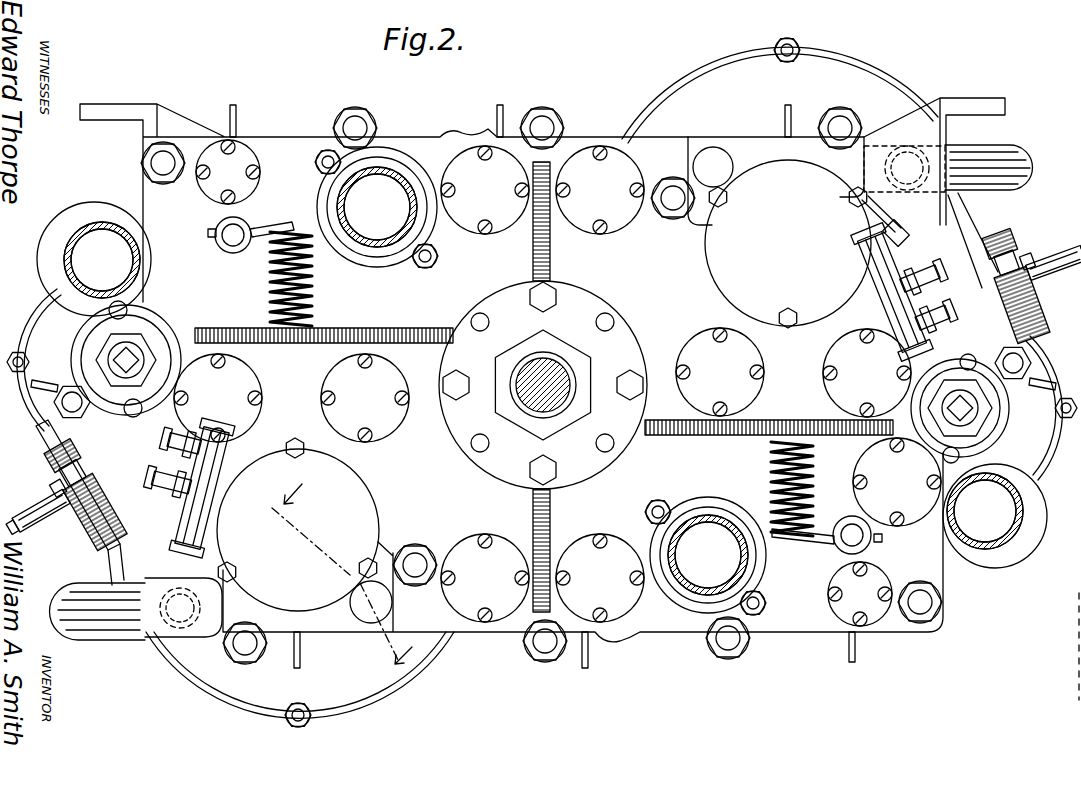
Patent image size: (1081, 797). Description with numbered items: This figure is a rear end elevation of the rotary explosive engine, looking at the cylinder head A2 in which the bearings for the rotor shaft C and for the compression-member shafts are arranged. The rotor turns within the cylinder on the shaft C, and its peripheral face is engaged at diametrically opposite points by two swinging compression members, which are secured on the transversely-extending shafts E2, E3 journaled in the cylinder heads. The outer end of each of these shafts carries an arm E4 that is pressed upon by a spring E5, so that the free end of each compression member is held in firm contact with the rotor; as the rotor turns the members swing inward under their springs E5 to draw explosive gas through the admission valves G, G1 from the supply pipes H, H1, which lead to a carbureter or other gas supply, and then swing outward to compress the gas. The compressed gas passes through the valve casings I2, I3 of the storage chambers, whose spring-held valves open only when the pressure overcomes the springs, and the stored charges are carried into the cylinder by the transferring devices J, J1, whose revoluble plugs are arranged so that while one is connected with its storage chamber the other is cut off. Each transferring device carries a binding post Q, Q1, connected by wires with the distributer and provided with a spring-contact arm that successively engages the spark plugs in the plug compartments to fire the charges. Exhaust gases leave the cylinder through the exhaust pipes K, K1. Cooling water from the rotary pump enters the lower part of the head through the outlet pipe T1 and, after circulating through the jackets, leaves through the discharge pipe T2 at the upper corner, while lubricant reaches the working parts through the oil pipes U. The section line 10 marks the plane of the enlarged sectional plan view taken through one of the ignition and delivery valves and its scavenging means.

The cylinder head A2 is at (608, 136).
The supply pipe H is at (94, 259).
The supply pipe H1 is at (1010, 515).
The admission valve G is at (99, 354).
The admission valve G1 is at (970, 384).
The exhaust pipe K1 is at (377, 207).
The exhaust pipe K is at (708, 555).
The shaft C is at (530, 366).
The transferring device J is at (304, 530).
The transferring device J1 is at (788, 244).
The shaft E2 is at (232, 240).
The shaft E3 is at (852, 532).
The arm E4 is at (281, 229).
The spring E5 is at (313, 292).
The binding post Q is at (185, 460).
The binding post Q1 is at (918, 300).
The valve casing I2 is at (58, 480).
The valve casing I3 is at (1008, 270).
The outlet pipe T1 is at (84, 632).
The discharge pipe T2 is at (1015, 166).
The oil pipe U is at (866, 648).
The section line 10 is at (333, 580).